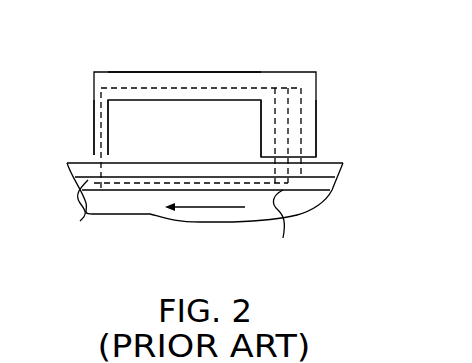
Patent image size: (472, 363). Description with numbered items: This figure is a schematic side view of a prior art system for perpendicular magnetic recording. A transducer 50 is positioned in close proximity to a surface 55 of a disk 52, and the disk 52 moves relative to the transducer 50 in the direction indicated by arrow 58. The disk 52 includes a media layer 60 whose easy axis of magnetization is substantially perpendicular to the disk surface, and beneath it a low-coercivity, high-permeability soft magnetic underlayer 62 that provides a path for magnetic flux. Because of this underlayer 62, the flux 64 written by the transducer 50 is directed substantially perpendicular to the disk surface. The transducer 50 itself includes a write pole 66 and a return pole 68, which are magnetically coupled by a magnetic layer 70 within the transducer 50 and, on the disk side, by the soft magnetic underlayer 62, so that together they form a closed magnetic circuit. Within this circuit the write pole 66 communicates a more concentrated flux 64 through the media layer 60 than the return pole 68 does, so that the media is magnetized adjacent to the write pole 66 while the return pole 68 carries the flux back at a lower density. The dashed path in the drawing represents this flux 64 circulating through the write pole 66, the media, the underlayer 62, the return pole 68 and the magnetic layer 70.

The transducer 50 is at (315, 53).
The disk 52 is at (338, 222).
The surface 55 is at (320, 163).
The arrow 58 is at (205, 206).
The media layer 60 is at (281, 224).
The underlayer 62 is at (83, 211).
The flux 64 is at (158, 87).
The write pole 66 is at (94, 140).
The return pole 68 is at (261, 143).
The magnetic layer 70 is at (222, 72).